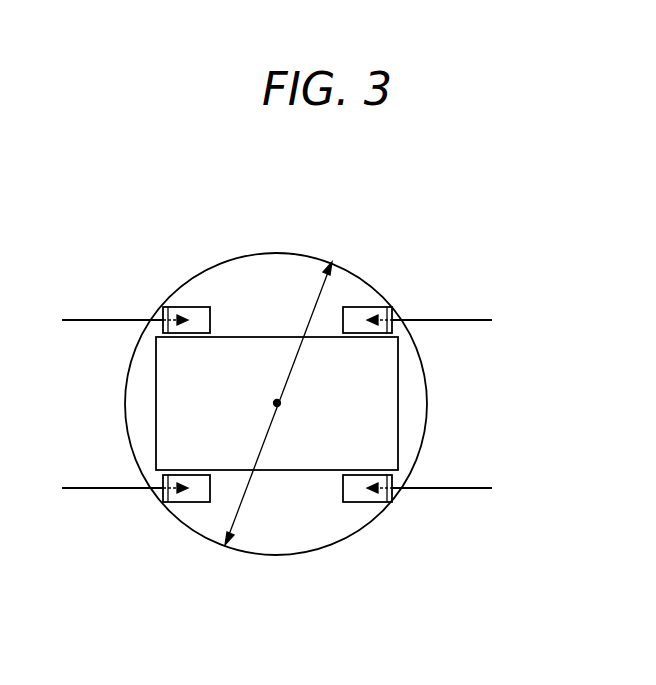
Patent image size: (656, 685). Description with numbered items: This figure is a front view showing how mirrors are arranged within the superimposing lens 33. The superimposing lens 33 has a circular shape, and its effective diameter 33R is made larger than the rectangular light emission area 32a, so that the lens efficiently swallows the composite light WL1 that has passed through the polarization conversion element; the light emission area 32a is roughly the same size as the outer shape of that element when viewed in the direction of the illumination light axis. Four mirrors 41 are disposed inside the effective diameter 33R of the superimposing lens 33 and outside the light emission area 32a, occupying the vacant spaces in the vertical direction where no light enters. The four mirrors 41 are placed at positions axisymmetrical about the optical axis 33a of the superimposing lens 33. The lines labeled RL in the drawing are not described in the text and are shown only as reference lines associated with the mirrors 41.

The superimposing lens 33 is at (292, 252).
The optical axis 33a is at (277, 403).
The effective diameter 33R is at (243, 518).
The light emission area 32a is at (398, 438).
The mirrors 41 is at (162, 312).
The reference line RL is at (87, 318).
The composite light WL1 is at (285, 457).